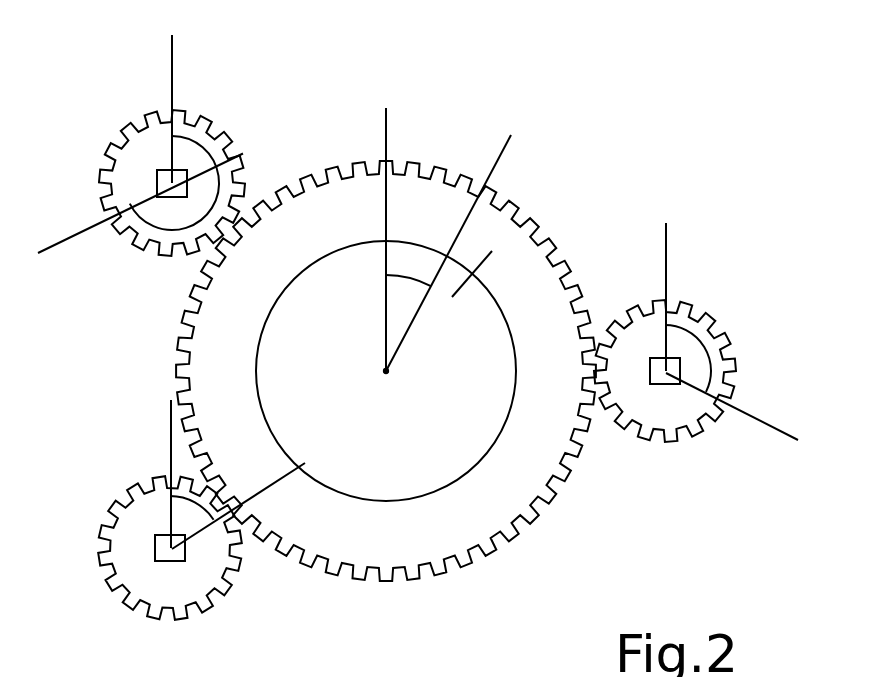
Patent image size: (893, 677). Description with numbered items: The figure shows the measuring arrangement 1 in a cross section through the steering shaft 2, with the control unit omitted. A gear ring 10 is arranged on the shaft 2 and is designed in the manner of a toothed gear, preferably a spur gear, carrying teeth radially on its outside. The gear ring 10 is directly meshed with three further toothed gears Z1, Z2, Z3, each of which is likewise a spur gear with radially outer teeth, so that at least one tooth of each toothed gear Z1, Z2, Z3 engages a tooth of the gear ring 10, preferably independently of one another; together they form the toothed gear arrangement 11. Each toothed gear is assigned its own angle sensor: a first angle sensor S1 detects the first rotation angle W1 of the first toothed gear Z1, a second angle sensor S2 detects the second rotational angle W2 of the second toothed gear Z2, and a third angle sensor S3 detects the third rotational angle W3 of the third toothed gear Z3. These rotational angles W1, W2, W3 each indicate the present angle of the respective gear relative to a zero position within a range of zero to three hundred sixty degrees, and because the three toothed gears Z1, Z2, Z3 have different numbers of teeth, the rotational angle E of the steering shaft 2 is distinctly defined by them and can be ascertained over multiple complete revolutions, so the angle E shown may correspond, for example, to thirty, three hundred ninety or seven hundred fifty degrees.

The measuring arrangement 1 is at (647, 559).
The shaft 2 is at (485, 260).
The gear ring 10 is at (410, 192).
The toothed gear arrangement 11 is at (605, 152).
The rotational angle of the steering shaft E is at (408, 296).
The first toothed gear Z1 is at (137, 153).
The second toothed gear Z2 is at (147, 513).
The third toothed gear Z3 is at (682, 418).
The first angle sensor S1 is at (178, 172).
The second angle sensor S2 is at (183, 562).
The third angle sensor S3 is at (680, 372).
The first rotation angle W1 is at (232, 165).
The second rotational angle W2 is at (200, 505).
The third rotational angle W3 is at (710, 330).